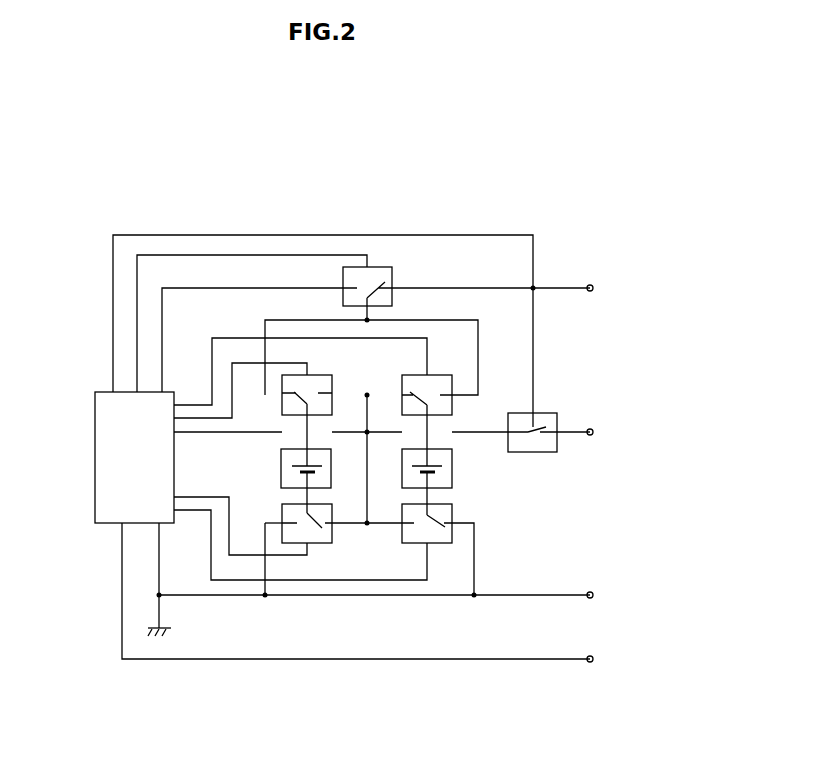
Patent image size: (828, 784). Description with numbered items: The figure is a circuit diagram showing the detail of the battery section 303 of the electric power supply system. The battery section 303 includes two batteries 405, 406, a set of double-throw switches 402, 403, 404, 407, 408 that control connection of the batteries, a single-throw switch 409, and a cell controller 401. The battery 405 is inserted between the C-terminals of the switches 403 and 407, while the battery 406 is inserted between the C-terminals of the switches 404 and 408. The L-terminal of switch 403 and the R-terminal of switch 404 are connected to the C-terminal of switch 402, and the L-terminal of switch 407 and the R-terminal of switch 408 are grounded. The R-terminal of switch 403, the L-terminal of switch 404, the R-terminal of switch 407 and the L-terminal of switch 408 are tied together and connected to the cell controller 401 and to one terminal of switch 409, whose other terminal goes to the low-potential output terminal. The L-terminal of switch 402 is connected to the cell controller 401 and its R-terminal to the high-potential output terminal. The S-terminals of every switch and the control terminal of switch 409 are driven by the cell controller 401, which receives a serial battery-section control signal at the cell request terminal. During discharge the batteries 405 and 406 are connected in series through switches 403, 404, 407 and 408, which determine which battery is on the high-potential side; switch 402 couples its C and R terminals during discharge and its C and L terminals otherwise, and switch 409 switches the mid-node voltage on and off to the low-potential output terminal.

The battery section 303 is at (381, 423).
The cell controller 401 is at (103, 392).
The double-throw switch 402 is at (392, 268).
The double-throw switch 403 is at (332, 377).
The double-throw switch 404 is at (452, 412).
The battery 405 is at (281, 467).
The battery 406 is at (452, 466).
The double-throw switch 407 is at (333, 540).
The double-throw switch 408 is at (452, 504).
The single-throw switch 409 is at (557, 418).